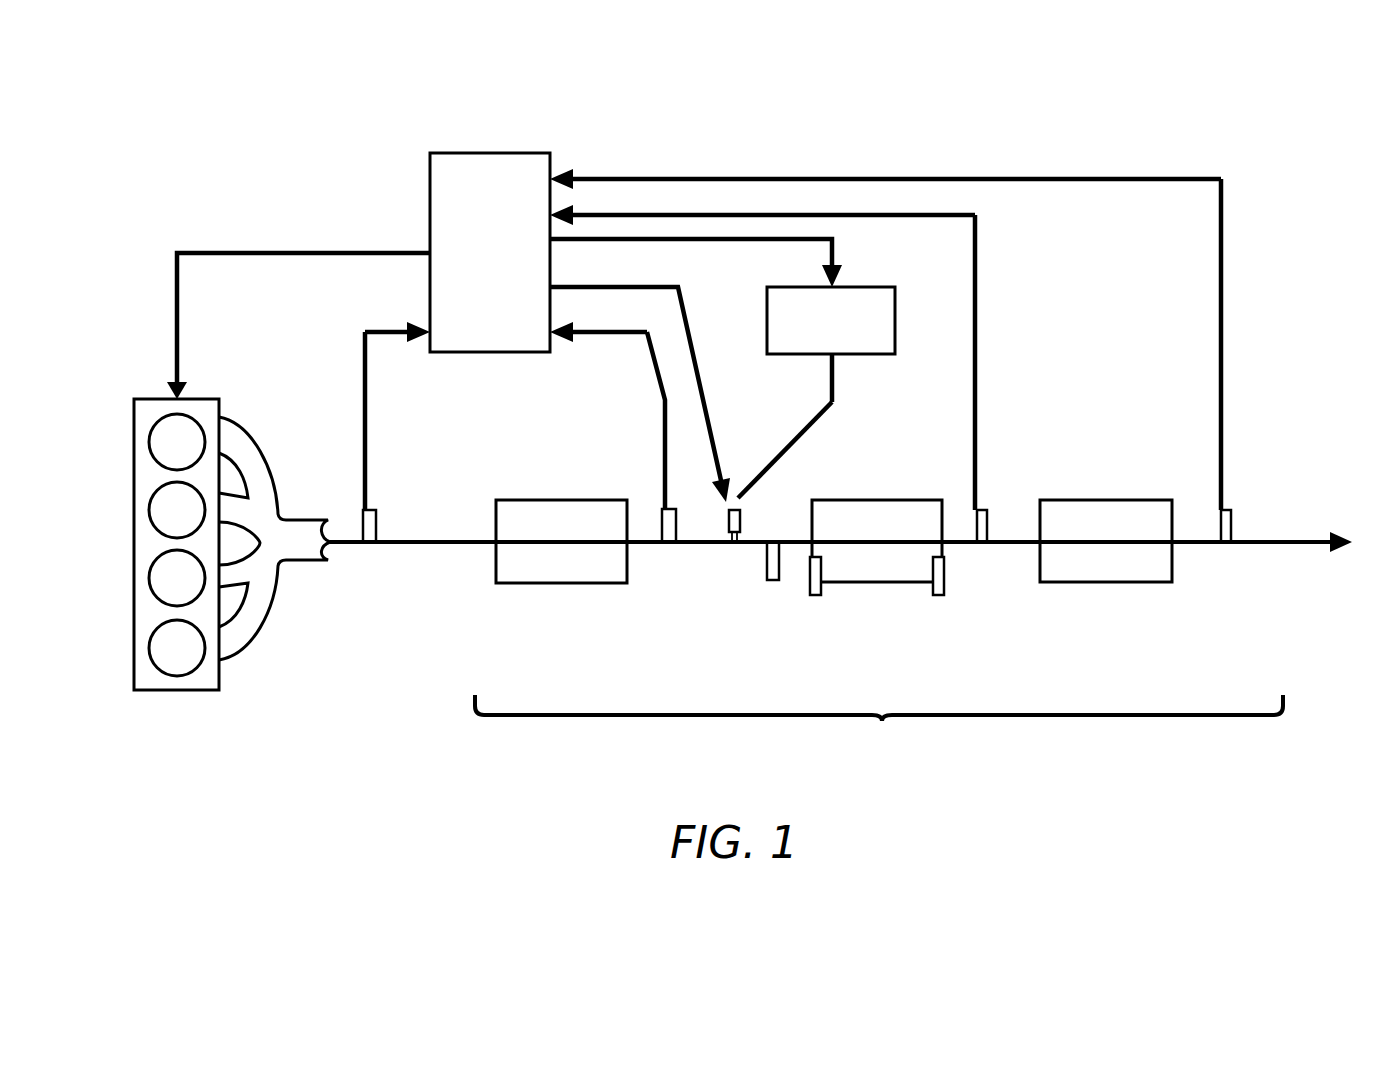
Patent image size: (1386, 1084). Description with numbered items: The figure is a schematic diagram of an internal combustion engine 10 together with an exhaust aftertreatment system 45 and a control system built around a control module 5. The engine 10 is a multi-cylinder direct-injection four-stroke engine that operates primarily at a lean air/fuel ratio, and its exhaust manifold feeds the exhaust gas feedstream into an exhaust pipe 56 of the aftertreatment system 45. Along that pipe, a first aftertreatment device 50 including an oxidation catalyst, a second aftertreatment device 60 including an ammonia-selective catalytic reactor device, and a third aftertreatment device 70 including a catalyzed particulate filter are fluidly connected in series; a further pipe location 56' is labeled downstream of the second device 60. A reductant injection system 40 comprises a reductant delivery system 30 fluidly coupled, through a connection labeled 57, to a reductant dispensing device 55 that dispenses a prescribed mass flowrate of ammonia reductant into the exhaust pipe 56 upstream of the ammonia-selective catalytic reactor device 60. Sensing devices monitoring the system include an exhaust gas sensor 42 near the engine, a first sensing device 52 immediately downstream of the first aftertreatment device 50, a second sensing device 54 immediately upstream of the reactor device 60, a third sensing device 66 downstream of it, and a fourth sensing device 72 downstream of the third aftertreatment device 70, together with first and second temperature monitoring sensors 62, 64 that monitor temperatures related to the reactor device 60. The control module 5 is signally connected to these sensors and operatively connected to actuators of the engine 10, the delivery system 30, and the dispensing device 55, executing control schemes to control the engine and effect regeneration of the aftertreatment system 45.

The control module 5 is at (490, 252).
The internal combustion engine 10 is at (151, 390).
The reductant delivery system 30 is at (831, 320).
The reductant injection system 40 is at (851, 389).
The exhaust gas sensor 42 is at (377, 527).
The exhaust aftertreatment system 45 is at (882, 720).
The first aftertreatment device 50 is at (561, 541).
The first sensing device 52 is at (676, 522).
The second sensing device 54 is at (773, 560).
The reductant dispensing device 55 is at (742, 518).
The exhaust pipe 56 is at (631, 594).
The exhaust passage location 56' is at (1044, 595).
The injector supply line 57 is at (834, 406).
The second aftertreatment device 60 is at (877, 541).
The first temperature monitoring sensor 62 is at (810, 580).
The second temperature monitoring sensor 64 is at (944, 580).
The third sensing device 66 is at (988, 527).
The third aftertreatment device 70 is at (1106, 541).
The fourth sensing device 72 is at (1232, 527).